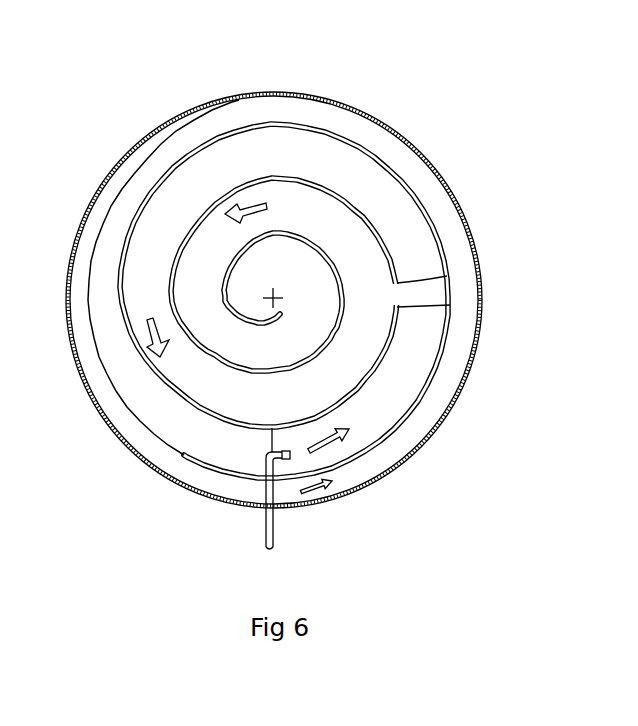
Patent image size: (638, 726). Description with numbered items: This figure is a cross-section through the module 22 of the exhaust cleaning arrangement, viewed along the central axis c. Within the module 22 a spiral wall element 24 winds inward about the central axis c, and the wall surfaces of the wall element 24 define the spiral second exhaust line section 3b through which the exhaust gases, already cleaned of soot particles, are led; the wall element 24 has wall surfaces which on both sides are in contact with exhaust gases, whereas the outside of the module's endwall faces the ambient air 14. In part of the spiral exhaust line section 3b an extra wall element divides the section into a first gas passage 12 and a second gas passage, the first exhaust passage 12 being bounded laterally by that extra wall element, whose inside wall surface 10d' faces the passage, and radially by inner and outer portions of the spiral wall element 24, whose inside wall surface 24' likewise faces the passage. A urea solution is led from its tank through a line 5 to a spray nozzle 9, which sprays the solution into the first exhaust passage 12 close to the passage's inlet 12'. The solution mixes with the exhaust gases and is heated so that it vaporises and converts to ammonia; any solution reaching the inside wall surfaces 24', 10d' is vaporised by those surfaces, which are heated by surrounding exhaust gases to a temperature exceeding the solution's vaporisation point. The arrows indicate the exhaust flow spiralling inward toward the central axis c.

The ambient air 14 is at (134, 82).
The module 22 is at (403, 110).
The wall element 24 is at (313, 297).
The second exhaust line section 3b is at (300, 150).
The channel section 24' is at (372, 318).
The inside wall surface 10d' is at (492, 365).
The first gas passage 12 is at (462, 414).
The inlet 12' is at (195, 479).
The spray nozzle 9 is at (287, 451).
The line 5 is at (264, 528).
The central axis c is at (276, 294).